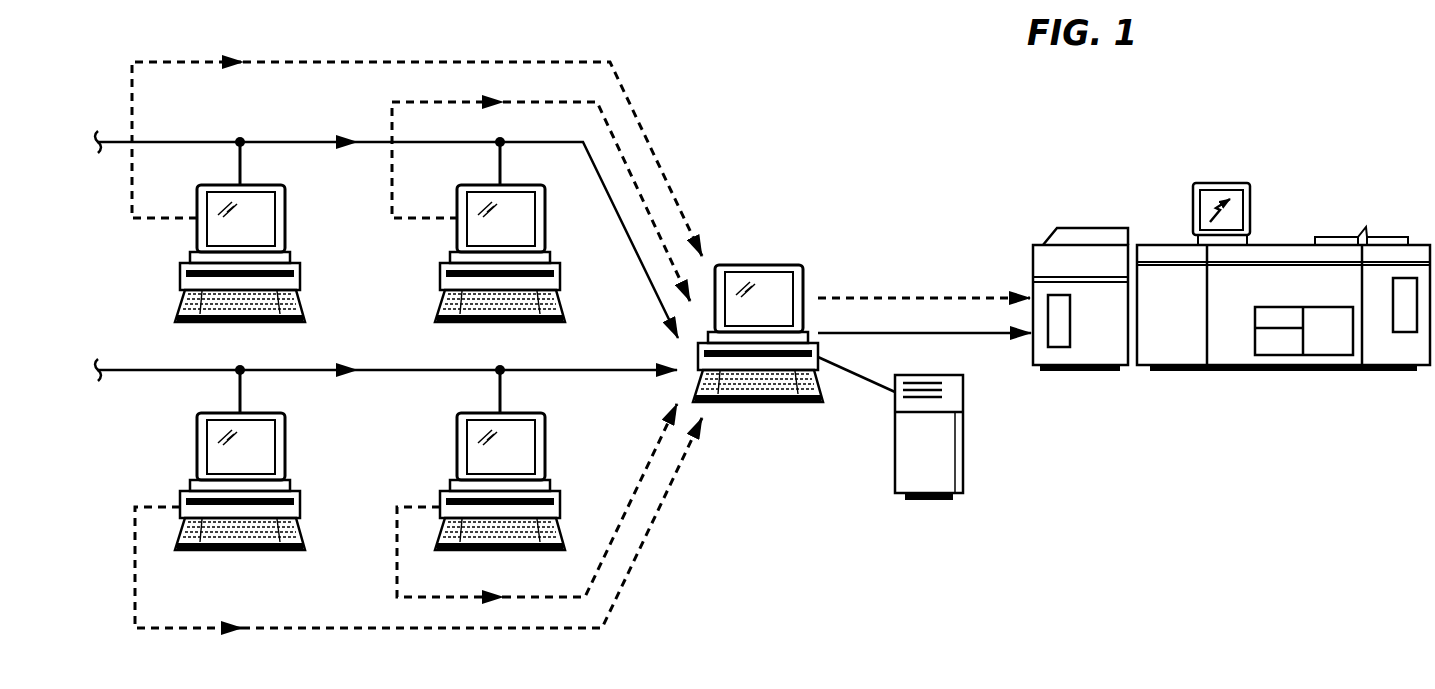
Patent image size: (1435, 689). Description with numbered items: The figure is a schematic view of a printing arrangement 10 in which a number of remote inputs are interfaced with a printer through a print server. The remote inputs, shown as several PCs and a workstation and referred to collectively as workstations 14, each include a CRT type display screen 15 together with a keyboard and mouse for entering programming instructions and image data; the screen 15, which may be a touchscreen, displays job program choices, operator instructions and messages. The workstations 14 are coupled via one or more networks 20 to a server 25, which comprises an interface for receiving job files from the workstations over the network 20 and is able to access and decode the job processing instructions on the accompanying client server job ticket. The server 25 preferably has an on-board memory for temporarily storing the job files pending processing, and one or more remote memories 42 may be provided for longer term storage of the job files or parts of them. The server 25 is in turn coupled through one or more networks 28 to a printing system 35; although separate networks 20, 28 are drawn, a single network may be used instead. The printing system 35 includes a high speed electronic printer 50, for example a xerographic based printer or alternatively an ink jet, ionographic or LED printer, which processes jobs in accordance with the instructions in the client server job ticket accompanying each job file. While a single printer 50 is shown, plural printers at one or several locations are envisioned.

The printing arrangement 10 is at (751, 122).
The workstations 14 is at (420, 256).
The display screen 15 is at (513, 222).
The network 20 is at (658, 306).
The server 25 is at (760, 264).
The network 28 is at (927, 335).
The printing system 35 is at (1321, 203).
The remote memory 42 is at (893, 453).
The high speed electronic printer 50 is at (1233, 354).